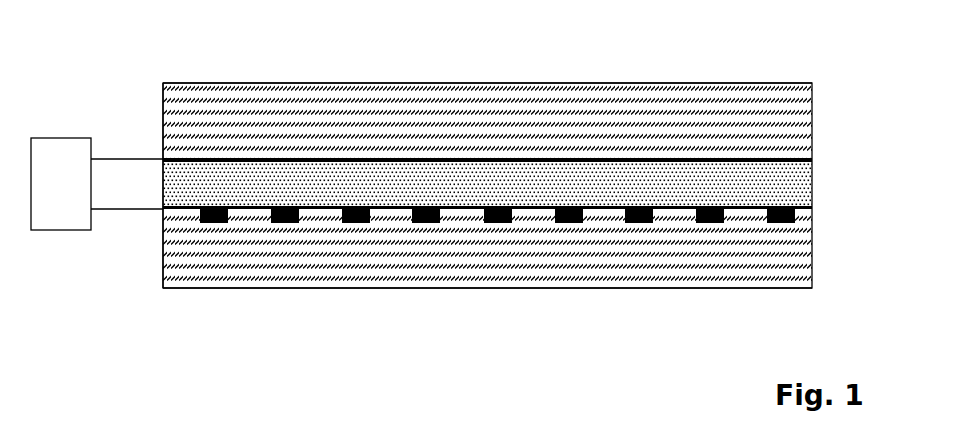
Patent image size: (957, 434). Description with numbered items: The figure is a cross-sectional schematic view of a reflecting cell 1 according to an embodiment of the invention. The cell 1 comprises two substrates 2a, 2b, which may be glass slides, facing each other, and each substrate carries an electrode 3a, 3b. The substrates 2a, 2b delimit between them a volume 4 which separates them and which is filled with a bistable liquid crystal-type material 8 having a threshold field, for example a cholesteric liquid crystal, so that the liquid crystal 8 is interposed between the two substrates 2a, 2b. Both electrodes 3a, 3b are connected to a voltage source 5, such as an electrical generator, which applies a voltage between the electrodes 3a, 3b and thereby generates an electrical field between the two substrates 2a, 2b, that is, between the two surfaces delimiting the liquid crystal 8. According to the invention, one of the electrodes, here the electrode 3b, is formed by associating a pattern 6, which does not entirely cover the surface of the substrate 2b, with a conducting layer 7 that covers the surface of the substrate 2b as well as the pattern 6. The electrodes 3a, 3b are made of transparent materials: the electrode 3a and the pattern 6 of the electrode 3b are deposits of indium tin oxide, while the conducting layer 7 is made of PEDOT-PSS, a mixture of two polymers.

The reflecting cell 1 is at (792, 33).
The substrate 2a is at (786, 117).
The substrate 2b is at (784, 248).
The electrode 3a is at (794, 173).
The electrode 3b is at (814, 197).
The volume 4 is at (150, 188).
The voltage source 5 is at (97, 184).
The pattern 6 is at (215, 223).
The conducting layer 7 is at (401, 199).
The bistable liquid crystal-type material 8 is at (437, 177).